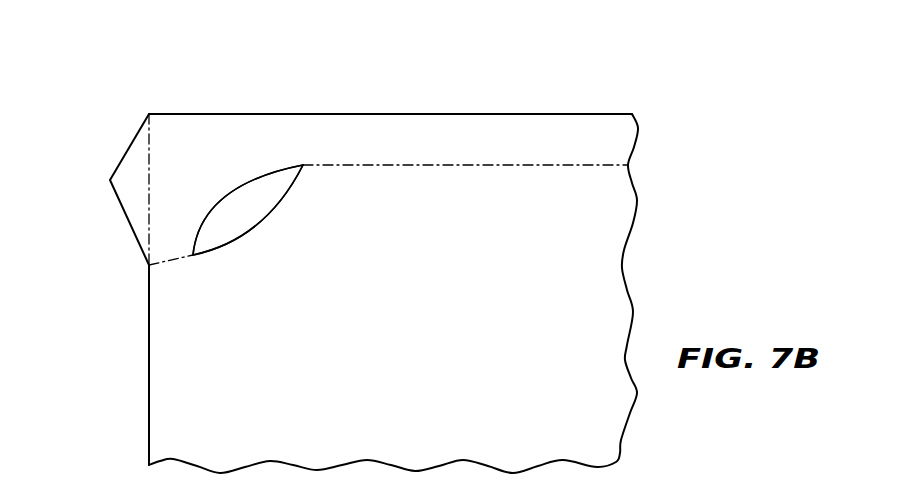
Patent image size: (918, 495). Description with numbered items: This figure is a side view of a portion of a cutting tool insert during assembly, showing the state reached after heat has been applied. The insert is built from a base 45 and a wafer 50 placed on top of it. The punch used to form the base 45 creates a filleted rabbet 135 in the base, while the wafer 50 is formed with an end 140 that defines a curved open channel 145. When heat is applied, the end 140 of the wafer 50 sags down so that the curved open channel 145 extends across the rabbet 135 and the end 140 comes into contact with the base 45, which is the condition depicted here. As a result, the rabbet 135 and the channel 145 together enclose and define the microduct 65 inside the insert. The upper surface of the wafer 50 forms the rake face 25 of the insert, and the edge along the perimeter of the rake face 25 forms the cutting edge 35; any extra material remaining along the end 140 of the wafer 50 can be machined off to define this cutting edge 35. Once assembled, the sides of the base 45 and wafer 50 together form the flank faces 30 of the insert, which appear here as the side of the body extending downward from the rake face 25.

The rake face 25 is at (335, 114).
The flank faces 30 is at (148, 385).
The cutting edge 35 is at (149, 114).
The base 45 is at (600, 268).
The wafer 50 is at (520, 126).
The microduct 65 is at (228, 230).
The filleted rabbet 135 is at (276, 208).
The end 140 is at (166, 195).
The curved open channel 145 is at (221, 200).